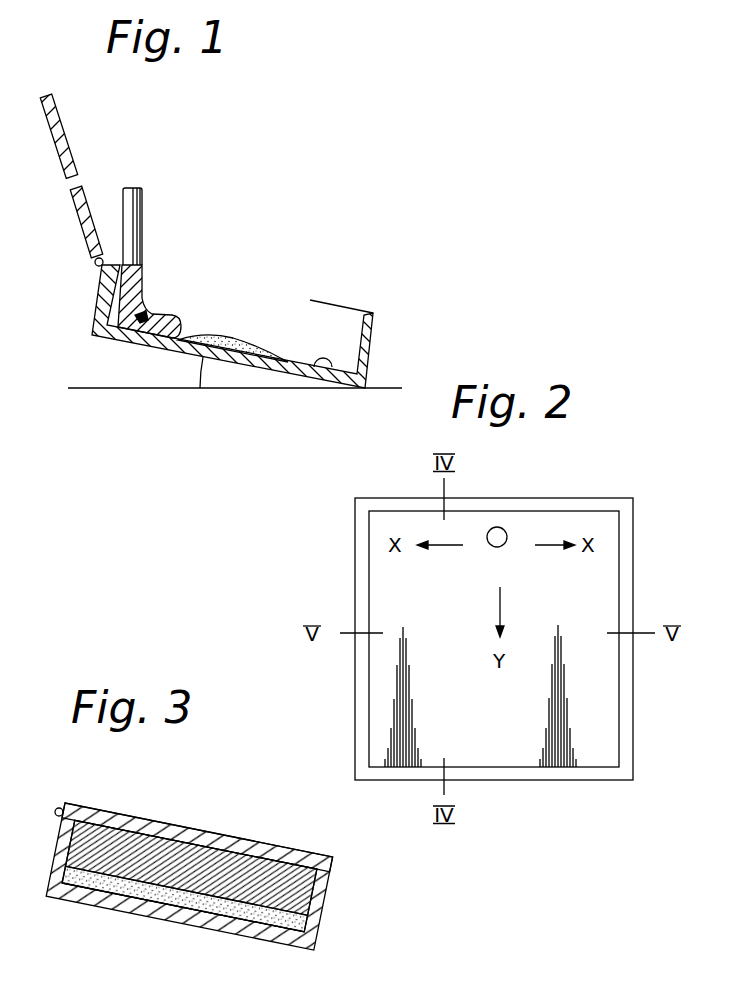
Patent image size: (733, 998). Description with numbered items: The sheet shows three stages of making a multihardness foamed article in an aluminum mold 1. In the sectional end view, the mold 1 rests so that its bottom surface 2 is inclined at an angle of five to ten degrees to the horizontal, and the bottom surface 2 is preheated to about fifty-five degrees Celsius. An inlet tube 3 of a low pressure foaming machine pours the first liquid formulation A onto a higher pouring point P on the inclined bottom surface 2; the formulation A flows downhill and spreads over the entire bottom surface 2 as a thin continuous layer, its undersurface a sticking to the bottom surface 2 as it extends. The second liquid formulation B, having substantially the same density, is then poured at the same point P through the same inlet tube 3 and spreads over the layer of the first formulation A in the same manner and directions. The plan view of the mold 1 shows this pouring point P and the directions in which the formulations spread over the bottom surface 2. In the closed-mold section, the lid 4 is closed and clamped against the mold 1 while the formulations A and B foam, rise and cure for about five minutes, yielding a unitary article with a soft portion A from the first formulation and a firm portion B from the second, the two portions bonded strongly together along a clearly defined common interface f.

In FIG. 1, the mold 1 is at (382, 330).
In FIG. 3, the mold 1 is at (325, 914).
In FIG. 1, the bottom surface 2 is at (328, 371).
In FIG. 2, the bottom surface 2 is at (568, 600).
In FIG. 1, the inlet tube 3 is at (143, 222).
In FIG. 1, the lid 4 is at (90, 214).
In FIG. 3, the lid 4 is at (290, 843).
In FIG. 1, the first liquid formulation A is at (243, 336).
In FIG. 3, the first liquid formulation A is at (140, 893).
In FIG. 1, the second liquid formulation B is at (142, 269).
In FIG. 3, the second liquid formulation B is at (197, 843).
In FIG. 1, the pouring point P is at (147, 318).
In FIG. 2, the pouring point P is at (504, 531).
In FIG. 1, the undersurface a is at (232, 362).
In FIG. 3, the interface f is at (247, 905).